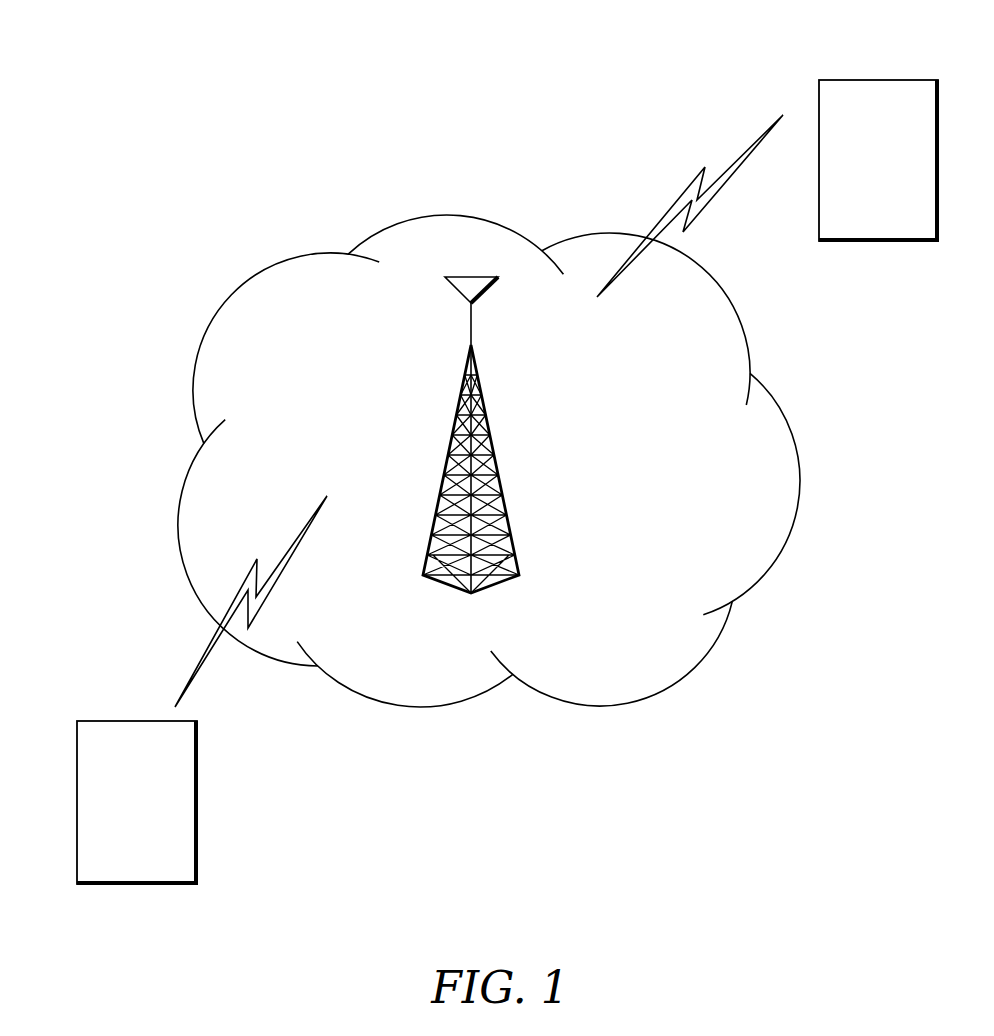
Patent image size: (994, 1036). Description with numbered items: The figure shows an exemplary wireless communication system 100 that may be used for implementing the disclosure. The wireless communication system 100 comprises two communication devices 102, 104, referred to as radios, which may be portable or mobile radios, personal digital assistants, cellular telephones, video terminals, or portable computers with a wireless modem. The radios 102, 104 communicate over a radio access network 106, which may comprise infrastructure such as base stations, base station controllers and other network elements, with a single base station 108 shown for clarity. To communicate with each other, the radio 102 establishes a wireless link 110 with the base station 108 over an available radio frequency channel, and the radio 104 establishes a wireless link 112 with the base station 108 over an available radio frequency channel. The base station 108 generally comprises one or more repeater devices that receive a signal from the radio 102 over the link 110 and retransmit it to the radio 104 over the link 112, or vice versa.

The wireless communication system 100 is at (186, 190).
The communication device 102 is at (805, 55).
The communication device 104 is at (97, 695).
The radio access network 106 is at (450, 215).
The base station 108 is at (483, 395).
The wireless link 110 is at (739, 160).
The wireless link 112 is at (213, 637).